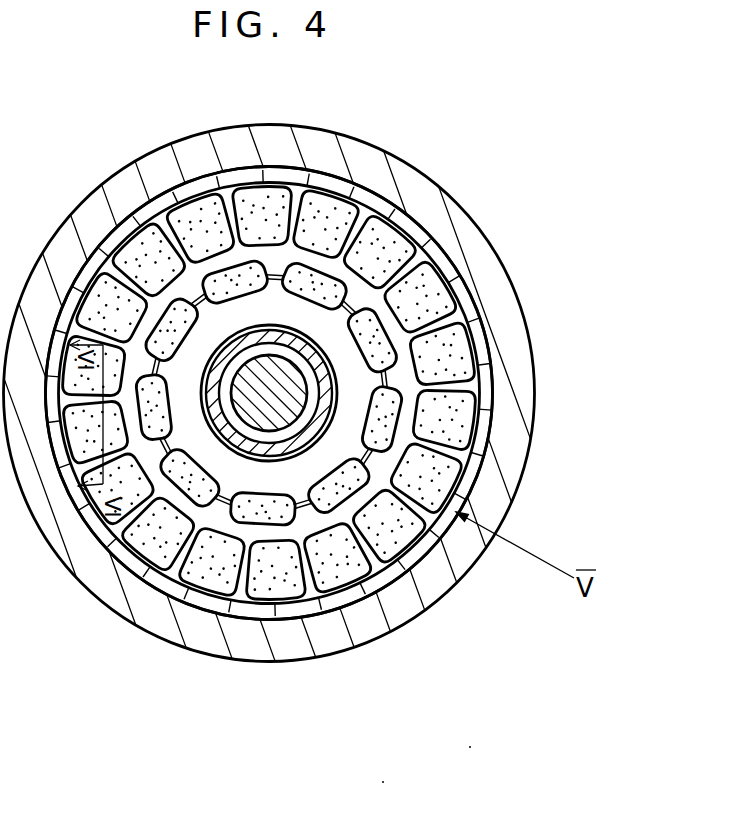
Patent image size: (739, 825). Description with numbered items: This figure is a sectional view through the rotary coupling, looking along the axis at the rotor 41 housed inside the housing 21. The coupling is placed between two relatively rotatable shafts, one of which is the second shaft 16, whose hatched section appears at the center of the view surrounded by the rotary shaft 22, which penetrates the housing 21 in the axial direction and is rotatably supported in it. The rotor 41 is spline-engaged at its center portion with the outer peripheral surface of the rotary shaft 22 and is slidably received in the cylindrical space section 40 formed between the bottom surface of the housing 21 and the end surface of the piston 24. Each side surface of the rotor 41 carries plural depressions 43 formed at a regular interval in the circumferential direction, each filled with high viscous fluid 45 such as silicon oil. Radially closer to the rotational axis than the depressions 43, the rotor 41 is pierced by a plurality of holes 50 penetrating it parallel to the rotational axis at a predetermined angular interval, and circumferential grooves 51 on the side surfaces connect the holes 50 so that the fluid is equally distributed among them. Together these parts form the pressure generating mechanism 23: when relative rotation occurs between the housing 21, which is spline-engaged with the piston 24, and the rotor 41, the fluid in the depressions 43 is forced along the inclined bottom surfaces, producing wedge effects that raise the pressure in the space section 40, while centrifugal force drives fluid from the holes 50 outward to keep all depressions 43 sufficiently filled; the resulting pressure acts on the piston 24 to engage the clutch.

The second shaft 16 is at (268, 369).
The housing 21 is at (441, 571).
The rotary shaft 22 is at (322, 392).
The pressure generating mechanism 23 is at (458, 293).
The piston 24 is at (482, 456).
The space section 40 is at (148, 571).
The rotor 41 is at (309, 524).
The depressions 43 is at (197, 228).
The high viscous fluid 45 is at (222, 574).
The holes 50 is at (370, 342).
The grooves 51 is at (228, 293).